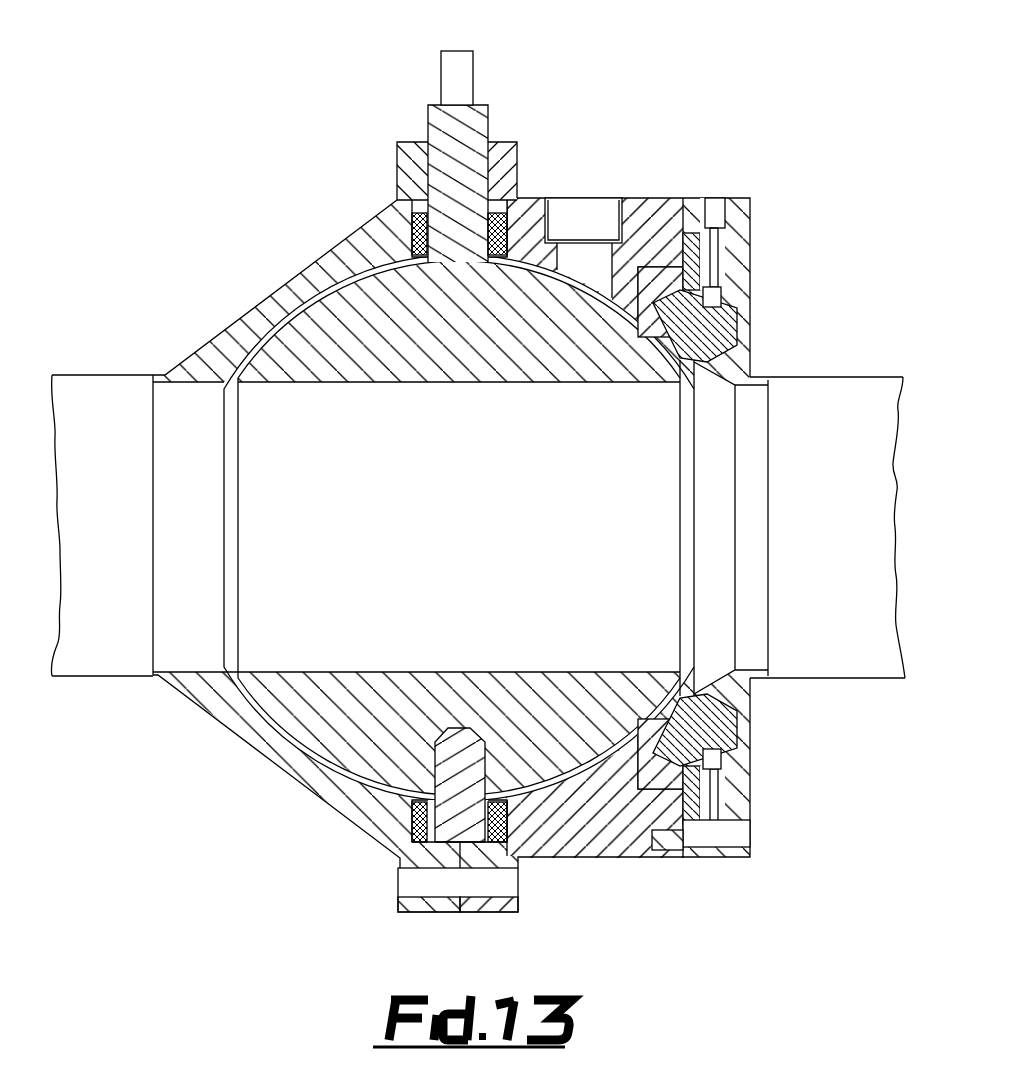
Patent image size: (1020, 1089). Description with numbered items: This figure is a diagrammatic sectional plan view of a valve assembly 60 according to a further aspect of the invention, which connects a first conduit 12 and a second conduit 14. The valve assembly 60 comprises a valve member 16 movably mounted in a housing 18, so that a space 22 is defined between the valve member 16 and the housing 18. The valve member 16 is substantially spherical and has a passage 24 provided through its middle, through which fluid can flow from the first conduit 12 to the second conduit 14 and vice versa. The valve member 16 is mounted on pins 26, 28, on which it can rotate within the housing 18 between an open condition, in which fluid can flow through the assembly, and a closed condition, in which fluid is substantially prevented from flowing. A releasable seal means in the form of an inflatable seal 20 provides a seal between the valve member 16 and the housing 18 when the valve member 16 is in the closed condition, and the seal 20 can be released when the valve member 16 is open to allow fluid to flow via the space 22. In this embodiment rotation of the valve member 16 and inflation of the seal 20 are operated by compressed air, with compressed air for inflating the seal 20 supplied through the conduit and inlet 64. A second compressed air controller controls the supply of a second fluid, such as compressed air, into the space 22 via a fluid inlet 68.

The valve assembly 60 is at (322, 88).
The first conduit 12 is at (80, 662).
The second conduit 14 is at (832, 662).
The valve member 16 is at (459, 533).
The housing 18 is at (586, 836).
The inflatable seal 20 is at (737, 333).
The space 22 is at (293, 743).
The passage 24 is at (263, 650).
The pin 26 is at (443, 833).
The pin 28 is at (462, 132).
The conduit and inlet 64 is at (715, 205).
The fluid inlet 68 is at (593, 212).